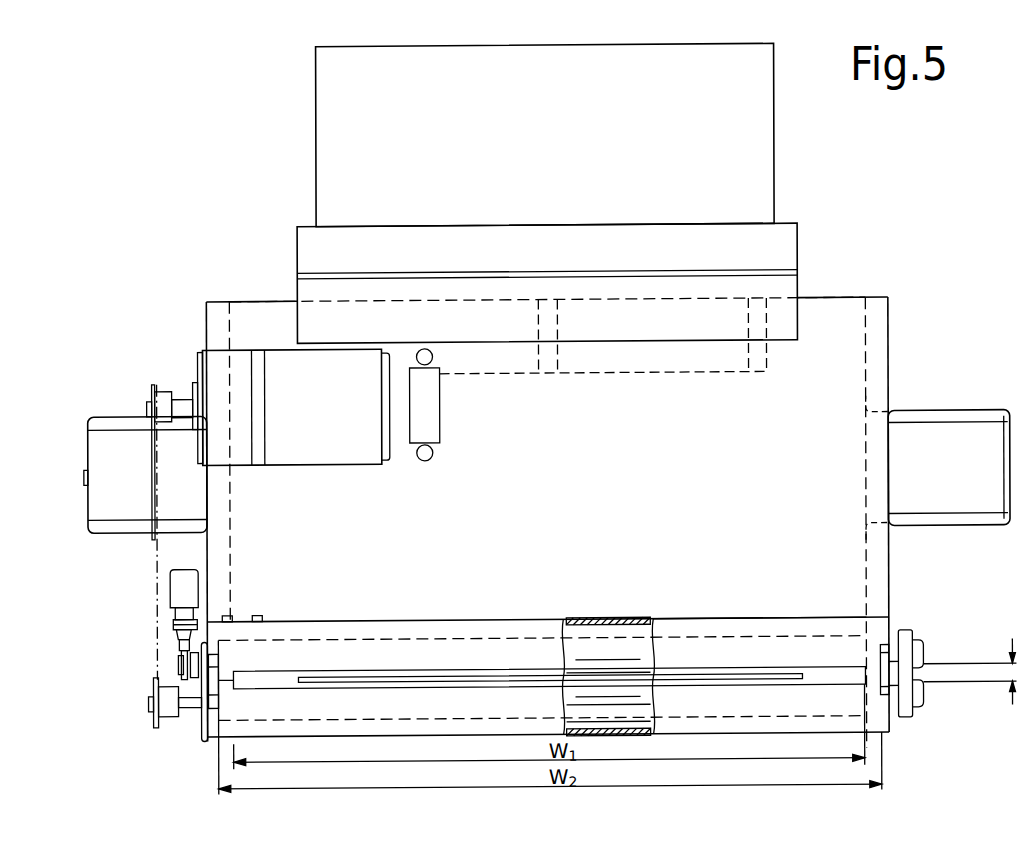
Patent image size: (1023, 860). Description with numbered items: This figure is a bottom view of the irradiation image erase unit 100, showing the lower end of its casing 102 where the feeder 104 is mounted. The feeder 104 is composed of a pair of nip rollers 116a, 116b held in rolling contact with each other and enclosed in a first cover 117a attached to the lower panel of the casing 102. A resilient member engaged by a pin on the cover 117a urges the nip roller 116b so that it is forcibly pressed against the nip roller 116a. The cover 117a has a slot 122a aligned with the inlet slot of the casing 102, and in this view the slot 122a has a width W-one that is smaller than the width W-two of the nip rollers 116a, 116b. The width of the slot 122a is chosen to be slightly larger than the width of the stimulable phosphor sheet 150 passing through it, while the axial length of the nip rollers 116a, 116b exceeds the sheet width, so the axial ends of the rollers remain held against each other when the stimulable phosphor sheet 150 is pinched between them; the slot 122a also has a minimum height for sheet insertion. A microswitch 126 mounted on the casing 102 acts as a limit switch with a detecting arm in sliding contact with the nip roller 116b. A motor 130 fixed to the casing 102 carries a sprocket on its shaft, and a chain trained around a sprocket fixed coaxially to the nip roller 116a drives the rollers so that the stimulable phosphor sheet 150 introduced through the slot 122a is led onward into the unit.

The irradiation image erase unit 100 is at (896, 307).
The casing 102 is at (892, 350).
The feeder 104 is at (192, 722).
The nip roller 116a is at (603, 705).
The nip roller 116b is at (590, 655).
The first cover 117a is at (740, 655).
The slot 122a is at (372, 683).
The microswitch 126 is at (182, 579).
The motor 130 is at (212, 368).
The stimulable phosphor sheet 150 is at (615, 678).